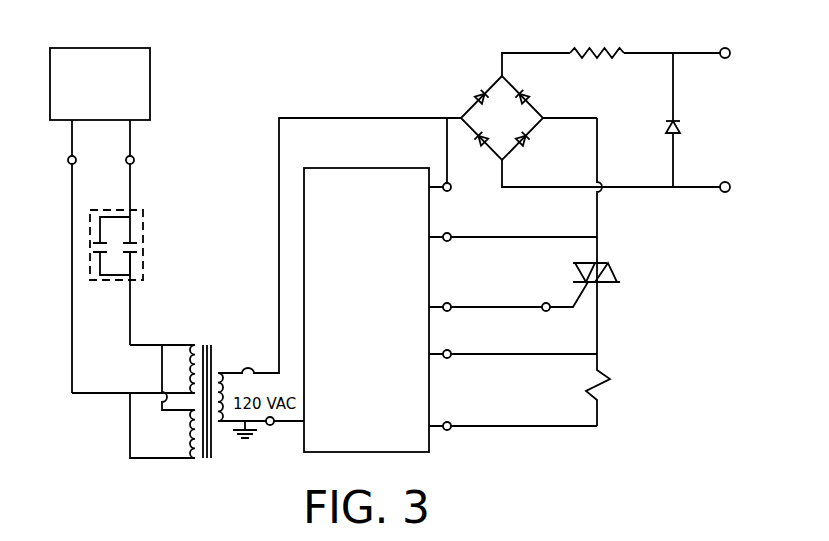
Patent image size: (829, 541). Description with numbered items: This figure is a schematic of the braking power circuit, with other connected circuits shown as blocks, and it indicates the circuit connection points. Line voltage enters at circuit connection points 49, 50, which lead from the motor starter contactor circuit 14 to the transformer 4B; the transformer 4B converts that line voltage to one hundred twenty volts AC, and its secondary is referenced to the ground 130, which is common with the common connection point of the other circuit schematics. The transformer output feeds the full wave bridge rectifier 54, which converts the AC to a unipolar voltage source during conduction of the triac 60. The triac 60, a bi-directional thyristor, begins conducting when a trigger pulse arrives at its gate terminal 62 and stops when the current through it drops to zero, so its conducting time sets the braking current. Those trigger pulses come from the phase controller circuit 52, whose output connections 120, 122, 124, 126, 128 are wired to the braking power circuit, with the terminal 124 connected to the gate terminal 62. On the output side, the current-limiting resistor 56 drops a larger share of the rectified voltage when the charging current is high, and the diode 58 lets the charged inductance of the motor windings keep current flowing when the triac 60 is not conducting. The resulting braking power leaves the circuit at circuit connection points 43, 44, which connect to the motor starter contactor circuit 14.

The motor starter contactor circuit 14 is at (123, 48).
The circuit connection point 49 is at (69, 164).
The circuit connection point 50 is at (135, 161).
The transformer 4B is at (210, 340).
The ground 130 is at (245, 441).
The phase controller circuit 52 is at (357, 226).
The output connection 120 is at (450, 191).
The output connection 122 is at (452, 235).
The output terminal 124 is at (452, 306).
The output connection 126 is at (453, 353).
The output connection 128 is at (452, 424).
The gate terminal 62 is at (548, 301).
The triac 60 is at (608, 263).
The full wave bridge rectifier 54 is at (468, 62).
The current-limiting resistor 56 is at (568, 50).
The diode 58 is at (681, 128).
The circuit connection point 44 is at (720, 50).
The circuit connection point 43 is at (728, 184).